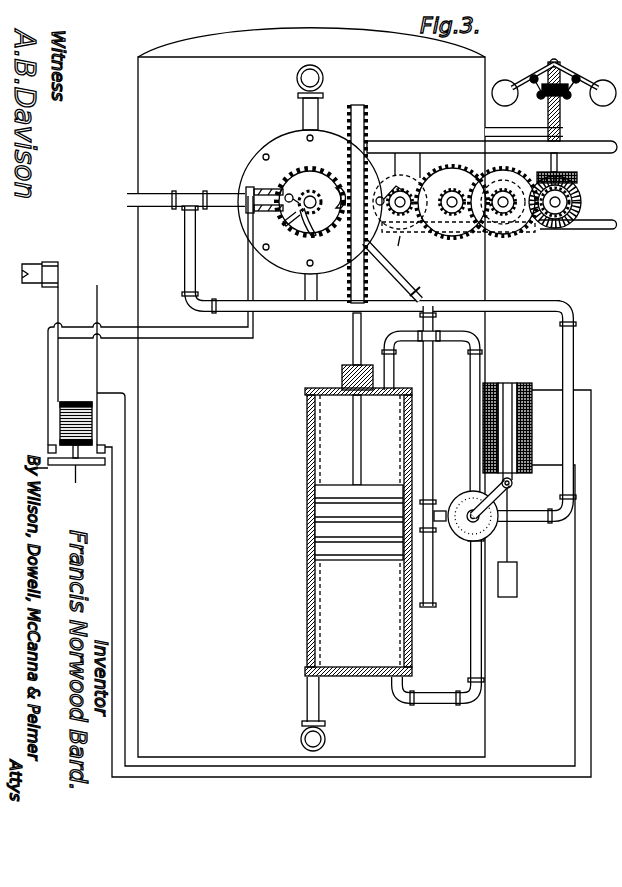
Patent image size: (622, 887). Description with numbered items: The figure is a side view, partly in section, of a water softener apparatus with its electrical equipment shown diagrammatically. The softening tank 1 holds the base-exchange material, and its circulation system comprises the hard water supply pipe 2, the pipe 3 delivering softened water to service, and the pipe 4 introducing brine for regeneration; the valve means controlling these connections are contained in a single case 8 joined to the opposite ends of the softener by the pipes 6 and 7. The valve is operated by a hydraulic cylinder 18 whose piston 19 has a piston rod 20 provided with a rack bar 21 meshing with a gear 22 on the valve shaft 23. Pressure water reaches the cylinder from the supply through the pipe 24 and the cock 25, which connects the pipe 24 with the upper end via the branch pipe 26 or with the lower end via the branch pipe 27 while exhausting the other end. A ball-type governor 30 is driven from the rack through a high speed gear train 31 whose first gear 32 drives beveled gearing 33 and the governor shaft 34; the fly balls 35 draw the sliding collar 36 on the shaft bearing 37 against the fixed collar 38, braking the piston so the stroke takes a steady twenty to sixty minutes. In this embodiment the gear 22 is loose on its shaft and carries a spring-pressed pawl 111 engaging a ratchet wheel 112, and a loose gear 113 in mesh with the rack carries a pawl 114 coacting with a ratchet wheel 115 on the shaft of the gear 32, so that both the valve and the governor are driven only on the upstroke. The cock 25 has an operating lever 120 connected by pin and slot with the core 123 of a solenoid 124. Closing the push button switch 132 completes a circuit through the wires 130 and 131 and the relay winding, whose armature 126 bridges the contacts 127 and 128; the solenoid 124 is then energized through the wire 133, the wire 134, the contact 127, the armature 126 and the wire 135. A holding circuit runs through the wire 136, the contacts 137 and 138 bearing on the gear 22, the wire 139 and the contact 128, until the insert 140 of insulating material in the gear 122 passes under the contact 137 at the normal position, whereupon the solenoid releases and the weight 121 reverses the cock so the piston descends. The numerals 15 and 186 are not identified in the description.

The softening tank 1 is at (140, 117).
The hard water supply pipe 2 is at (160, 208).
The softened water pipe 3 is at (456, 144).
The brine pipe 4 is at (593, 230).
The softener connecting pipe 6 is at (303, 108).
The softener connecting pipe 7 is at (307, 702).
The valve case 8 is at (273, 147).
The pipe 15 is at (434, 383).
The hydraulic cylinder 18 is at (308, 467).
The piston 19 is at (333, 512).
The piston rod 20 is at (357, 432).
The rack bar 21 is at (369, 122).
The valve operating gear 22 is at (320, 168).
The valve shaft 23 is at (287, 196).
The pipe 24 is at (568, 350).
The four-way cock 25 is at (465, 530).
The branch pipe 26 is at (472, 448).
The branch pipe 27 is at (470, 597).
The ball-type governor 30 is at (572, 70).
The high speed gear train 31 is at (501, 241).
The first gear 32 is at (432, 236).
The beveled gearing 33 is at (578, 182).
The governor shaft 34 is at (560, 160).
The fly balls 35 is at (505, 80).
The sliding collar 36 is at (570, 100).
The shaft bearing 37 is at (563, 130).
The fixed collar 38 is at (549, 64).
The spring-pressed pawl 111 is at (298, 235).
The ratchet wheel 112 is at (312, 236).
The loose gear 113 is at (392, 268).
The spring-pressed pawl 114 is at (395, 153).
The ratchet wheel 115 is at (420, 153).
The operating lever 120 is at (510, 488).
The weight 121 is at (517, 577).
The cord 122 is at (507, 530).
The solenoid core 123 is at (507, 387).
The solenoid 124 is at (487, 423).
The relay armature 126 is at (60, 420).
The contact 127 is at (106, 449).
The contact 128 is at (48, 449).
The wire 130 is at (97, 285).
The wire 131 is at (53, 305).
The push button switch 132 is at (27, 263).
The wire 133 is at (128, 412).
The wire 134 is at (113, 543).
The wire 135 is at (42, 385).
The wire 136 is at (167, 338).
The contact 137 is at (253, 212).
The contact 138 is at (246, 189).
The wire 139 is at (157, 327).
The insert 140 is at (337, 193).
The armature 186 is at (70, 470).